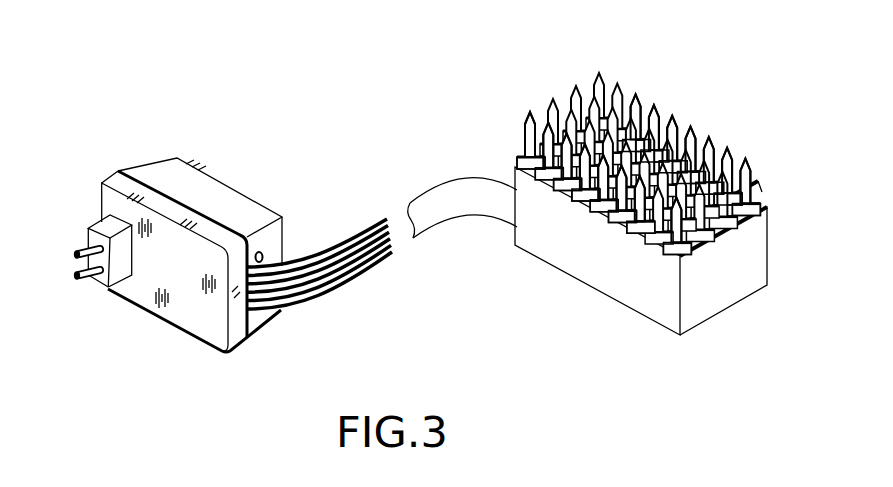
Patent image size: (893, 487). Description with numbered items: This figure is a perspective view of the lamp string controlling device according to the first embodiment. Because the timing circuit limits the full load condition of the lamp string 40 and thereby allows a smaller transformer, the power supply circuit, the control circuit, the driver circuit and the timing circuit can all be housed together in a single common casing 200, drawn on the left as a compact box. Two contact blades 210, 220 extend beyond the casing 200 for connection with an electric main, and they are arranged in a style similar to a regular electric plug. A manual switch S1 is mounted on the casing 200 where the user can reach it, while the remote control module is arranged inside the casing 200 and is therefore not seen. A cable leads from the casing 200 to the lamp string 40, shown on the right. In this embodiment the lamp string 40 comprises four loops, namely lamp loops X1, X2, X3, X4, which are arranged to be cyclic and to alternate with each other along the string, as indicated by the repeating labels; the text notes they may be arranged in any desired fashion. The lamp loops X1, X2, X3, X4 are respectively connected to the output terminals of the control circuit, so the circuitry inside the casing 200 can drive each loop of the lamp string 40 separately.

The casing 200 is at (204, 183).
The contact blade 210 is at (84, 250).
The contact blade 220 is at (80, 276).
The manual switch S1 is at (265, 254).
The lamp string 40 is at (768, 240).
The lamp loop X1 is at (691, 128).
The lamp loop X2 is at (673, 118).
The lamp loop X3 is at (654, 108).
The lamp loop X4 is at (636, 98).